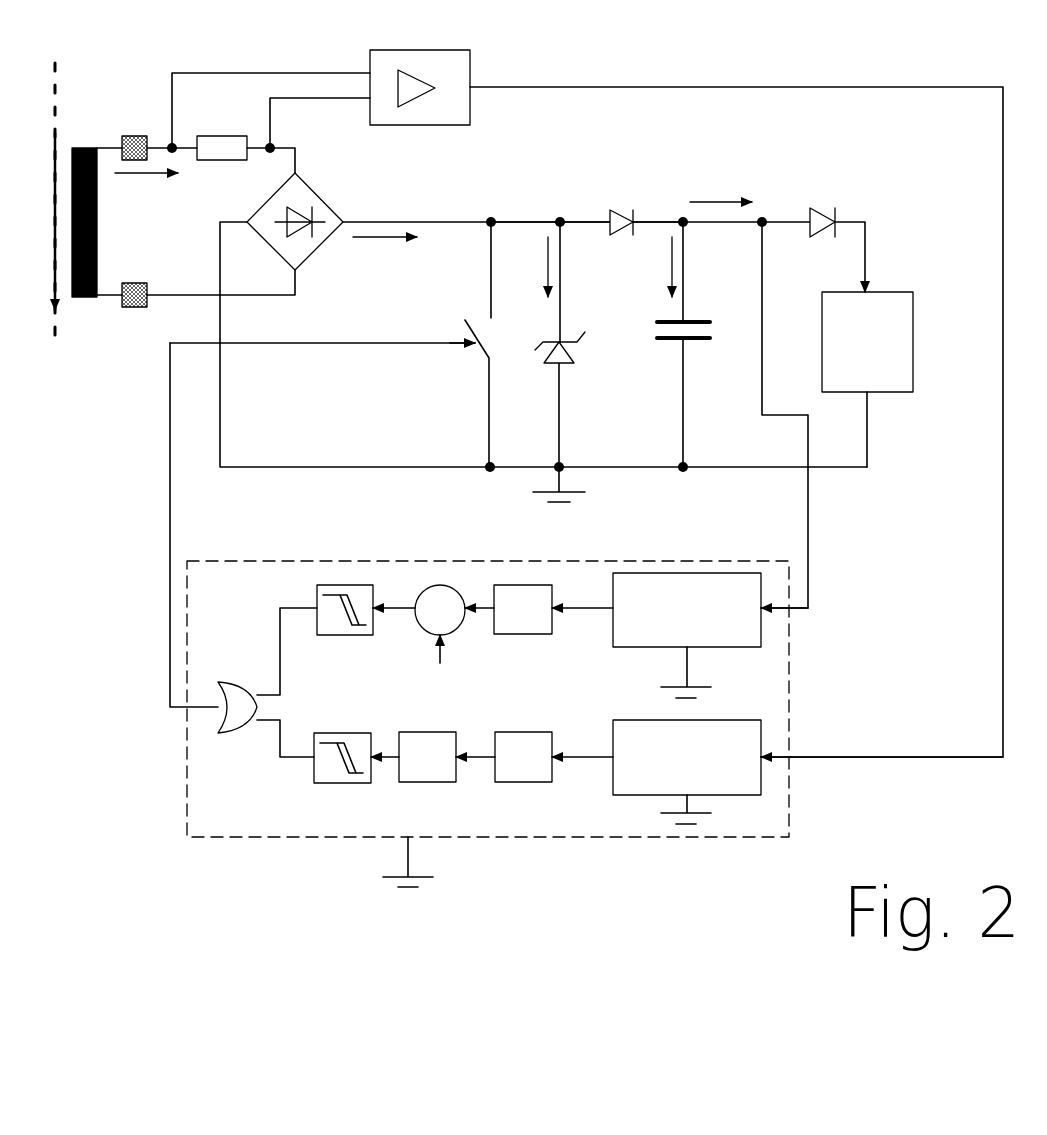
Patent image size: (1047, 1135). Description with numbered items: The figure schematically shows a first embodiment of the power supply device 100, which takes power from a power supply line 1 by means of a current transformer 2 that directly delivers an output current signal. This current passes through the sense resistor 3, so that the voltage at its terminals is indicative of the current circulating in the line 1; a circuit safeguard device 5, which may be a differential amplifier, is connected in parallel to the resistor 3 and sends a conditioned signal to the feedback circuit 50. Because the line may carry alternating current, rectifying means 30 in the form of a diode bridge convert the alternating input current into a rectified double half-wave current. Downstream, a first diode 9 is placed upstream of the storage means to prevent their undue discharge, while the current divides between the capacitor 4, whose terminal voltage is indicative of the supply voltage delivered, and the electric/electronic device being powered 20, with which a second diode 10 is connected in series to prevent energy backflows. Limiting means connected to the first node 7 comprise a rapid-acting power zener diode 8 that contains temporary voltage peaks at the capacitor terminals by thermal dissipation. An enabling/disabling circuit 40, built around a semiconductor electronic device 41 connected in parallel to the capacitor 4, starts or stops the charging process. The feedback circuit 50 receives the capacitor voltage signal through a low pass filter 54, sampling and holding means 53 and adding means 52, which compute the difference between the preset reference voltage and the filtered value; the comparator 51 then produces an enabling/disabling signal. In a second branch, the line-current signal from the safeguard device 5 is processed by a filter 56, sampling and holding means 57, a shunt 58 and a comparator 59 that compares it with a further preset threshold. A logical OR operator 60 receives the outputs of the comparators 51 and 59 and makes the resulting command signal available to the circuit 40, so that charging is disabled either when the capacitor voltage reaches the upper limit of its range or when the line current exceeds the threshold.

The power supply line 1 is at (53, 92).
The current transformer 2 is at (85, 300).
The resistor 3 is at (223, 162).
The capacitor 4 is at (662, 340).
The circuit safeguard device 5 is at (472, 112).
The first node 7 is at (555, 217).
The power zener diode 8 is at (568, 368).
The first diode 9 is at (607, 210).
The second diode 10 is at (810, 210).
The electric/electronic device being powered 20 is at (917, 332).
The rectifying means 30 is at (317, 252).
The enabling/disabling circuit 40 is at (487, 423).
The semiconductor electronic device 41 is at (485, 352).
The feedback circuit 50 is at (792, 682).
The comparator 51 is at (313, 580).
The adding means 52 is at (438, 580).
The sampling and holding means 53 is at (497, 580).
The low pass filter 54 is at (610, 587).
The filter 56 is at (617, 715).
The sampling and holding means 57 is at (502, 730).
The shunt 58 is at (423, 730).
The comparator 59 is at (357, 730).
The logical OR operator 60 is at (245, 680).
The power supply device 100 is at (113, 543).